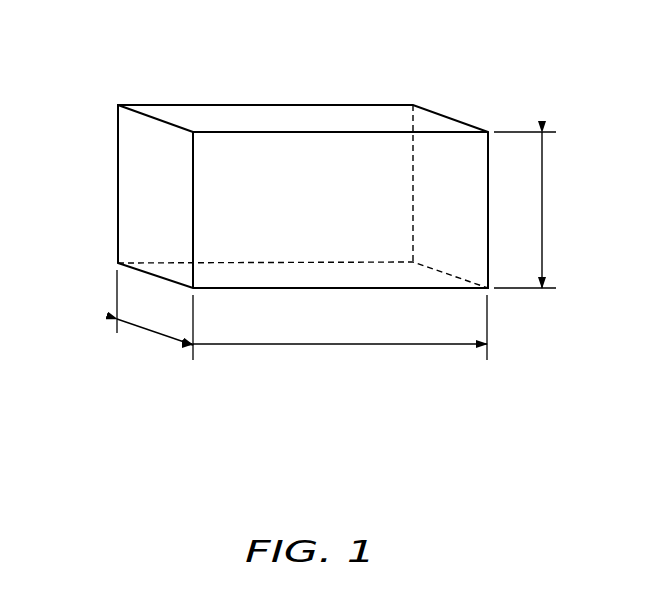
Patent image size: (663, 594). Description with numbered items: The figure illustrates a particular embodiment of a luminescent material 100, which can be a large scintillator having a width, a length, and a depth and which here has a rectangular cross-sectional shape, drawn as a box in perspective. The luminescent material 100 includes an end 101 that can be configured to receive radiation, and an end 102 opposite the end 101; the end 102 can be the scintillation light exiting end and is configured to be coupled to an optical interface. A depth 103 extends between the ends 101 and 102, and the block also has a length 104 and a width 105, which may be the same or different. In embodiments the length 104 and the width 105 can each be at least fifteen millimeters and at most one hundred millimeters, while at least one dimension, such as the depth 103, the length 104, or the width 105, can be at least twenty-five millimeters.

The luminescent material 100 is at (125, 56).
The end 101 is at (448, 173).
The end 102 is at (155, 193).
The depth 103 is at (313, 347).
The length 104 is at (542, 227).
The width 105 is at (157, 337).